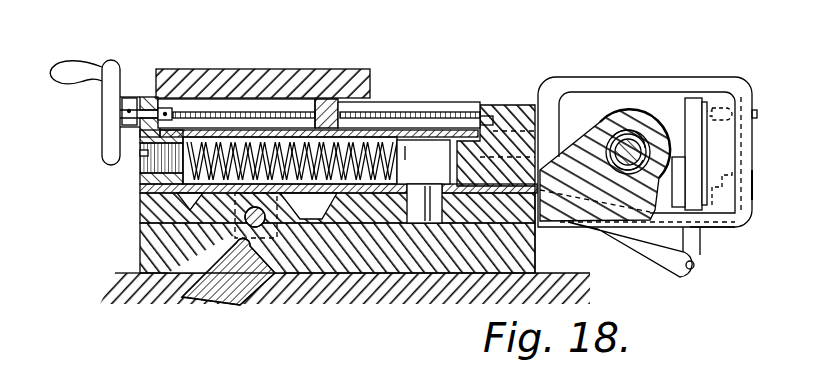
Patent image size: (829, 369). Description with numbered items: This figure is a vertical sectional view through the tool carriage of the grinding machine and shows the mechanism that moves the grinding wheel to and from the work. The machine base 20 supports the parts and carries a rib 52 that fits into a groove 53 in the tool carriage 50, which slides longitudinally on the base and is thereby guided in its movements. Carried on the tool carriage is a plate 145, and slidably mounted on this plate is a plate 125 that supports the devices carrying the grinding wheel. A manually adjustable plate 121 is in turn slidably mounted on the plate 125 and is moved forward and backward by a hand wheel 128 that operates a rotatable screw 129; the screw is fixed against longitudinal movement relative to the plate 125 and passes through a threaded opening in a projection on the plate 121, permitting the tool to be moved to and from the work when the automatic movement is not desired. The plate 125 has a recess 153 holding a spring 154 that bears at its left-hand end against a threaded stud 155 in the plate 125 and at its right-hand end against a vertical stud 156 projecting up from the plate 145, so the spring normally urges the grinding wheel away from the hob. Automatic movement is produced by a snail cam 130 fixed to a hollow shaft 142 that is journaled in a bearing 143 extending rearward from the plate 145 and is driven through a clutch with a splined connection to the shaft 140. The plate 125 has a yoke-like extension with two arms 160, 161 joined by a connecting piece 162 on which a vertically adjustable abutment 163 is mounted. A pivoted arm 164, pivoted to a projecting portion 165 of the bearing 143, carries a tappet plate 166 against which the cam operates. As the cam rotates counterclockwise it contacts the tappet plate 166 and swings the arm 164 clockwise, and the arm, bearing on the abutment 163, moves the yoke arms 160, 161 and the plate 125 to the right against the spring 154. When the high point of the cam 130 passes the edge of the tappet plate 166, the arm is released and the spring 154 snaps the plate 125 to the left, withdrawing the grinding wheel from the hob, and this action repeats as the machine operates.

The base or frame 20 is at (125, 273).
The tool carriage 50 is at (142, 238).
The rib 52 is at (205, 283).
The groove 53 is at (273, 250).
The plate 121 is at (197, 71).
The plate 125 is at (505, 103).
The hand wheel 128 is at (107, 108).
The rotatable screw 129 is at (172, 108).
The snail cam 130 is at (325, 110).
The shaft 140 is at (637, 137).
The hollow shaft 142 is at (607, 148).
The bearing 143 is at (612, 130).
The plate 145 is at (150, 192).
The recess 153 is at (460, 133).
The spring 154 is at (238, 143).
The threaded stud 155 is at (140, 163).
The vertical stud 156 is at (423, 181).
The arm 160 is at (560, 85).
The arm 161 is at (737, 229).
The connecting piece 162 is at (750, 185).
The vertically adjustable abutment 163 is at (728, 100).
The pivoted arm 164 is at (690, 106).
The projecting portion 165 is at (657, 260).
The tappet plate 166 is at (680, 177).